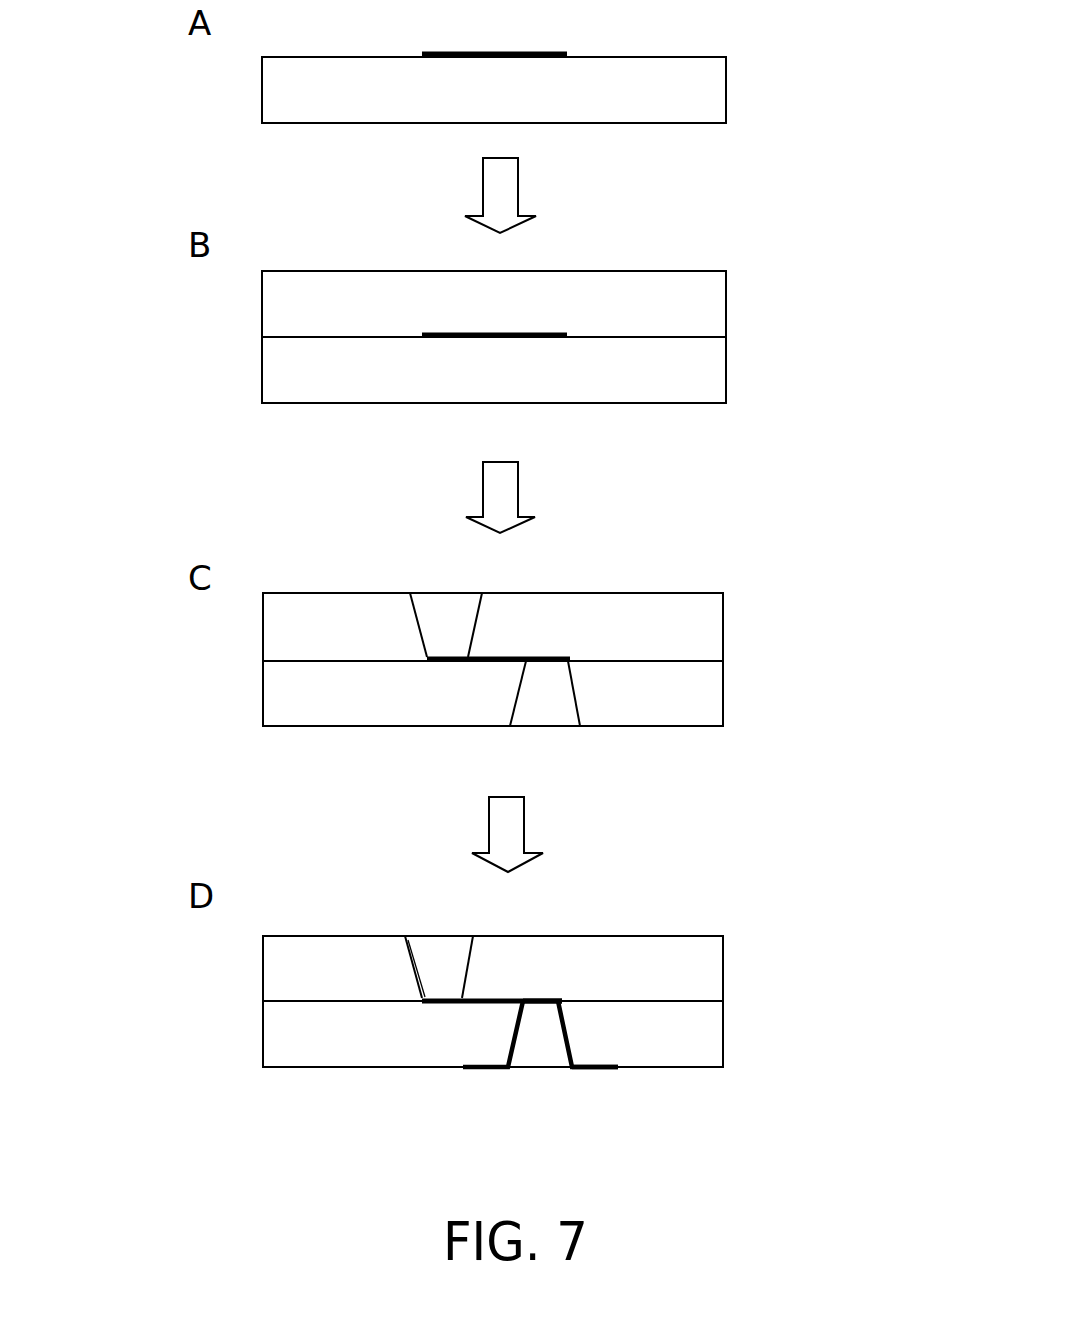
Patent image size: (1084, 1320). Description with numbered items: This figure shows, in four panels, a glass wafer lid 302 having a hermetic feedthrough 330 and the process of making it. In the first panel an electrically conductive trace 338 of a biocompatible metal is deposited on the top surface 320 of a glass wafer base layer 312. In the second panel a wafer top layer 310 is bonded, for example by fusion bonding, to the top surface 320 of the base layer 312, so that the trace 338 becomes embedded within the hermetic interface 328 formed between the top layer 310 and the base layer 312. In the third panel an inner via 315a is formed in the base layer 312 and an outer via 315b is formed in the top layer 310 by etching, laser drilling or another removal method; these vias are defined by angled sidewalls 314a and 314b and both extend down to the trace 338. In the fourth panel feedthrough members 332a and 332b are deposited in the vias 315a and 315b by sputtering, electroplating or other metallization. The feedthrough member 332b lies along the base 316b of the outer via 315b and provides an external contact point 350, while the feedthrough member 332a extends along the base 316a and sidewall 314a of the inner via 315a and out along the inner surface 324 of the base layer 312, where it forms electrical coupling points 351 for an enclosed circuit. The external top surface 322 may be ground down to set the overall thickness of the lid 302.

The glass wafer lid 302 is at (732, 936).
The wafer top layer 310 is at (676, 285).
The glass wafer base layer 312 is at (705, 57).
The sidewall 314a is at (513, 698).
The sidewall 314b is at (417, 613).
The inner via 315a is at (558, 748).
The outer via 315b is at (463, 580).
The base of inner via 316a is at (543, 997).
The base of outer via 316b is at (440, 1003).
The top surface of base layer 320 is at (605, 57).
The top surface 322 is at (308, 936).
The inner surface of base layer 324 is at (355, 1067).
The hermetic interface 328 is at (343, 337).
The hermetic feedthrough 330 is at (362, 927).
The feedthrough member 332a is at (513, 1055).
The feedthrough member 332b is at (437, 990).
The electrically conductive trace 338 is at (462, 52).
The external contact point 350 is at (445, 975).
The electrical coupling points 351 is at (607, 1067).